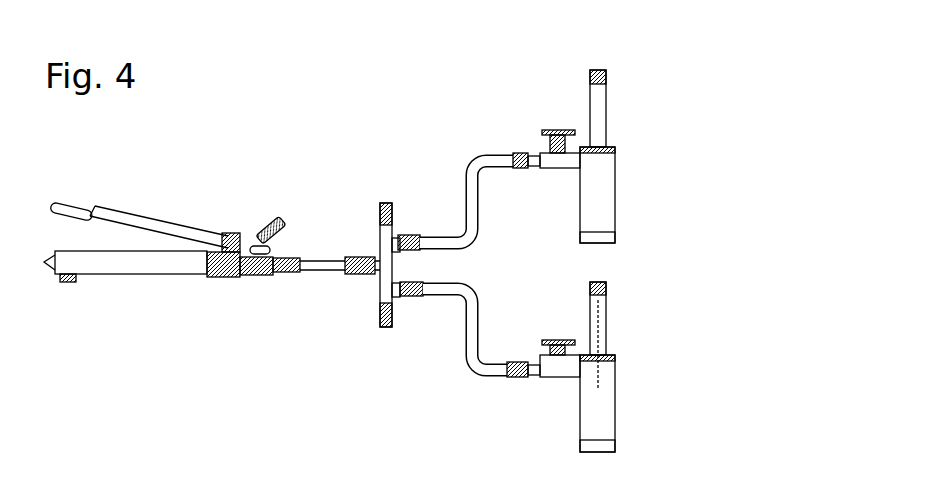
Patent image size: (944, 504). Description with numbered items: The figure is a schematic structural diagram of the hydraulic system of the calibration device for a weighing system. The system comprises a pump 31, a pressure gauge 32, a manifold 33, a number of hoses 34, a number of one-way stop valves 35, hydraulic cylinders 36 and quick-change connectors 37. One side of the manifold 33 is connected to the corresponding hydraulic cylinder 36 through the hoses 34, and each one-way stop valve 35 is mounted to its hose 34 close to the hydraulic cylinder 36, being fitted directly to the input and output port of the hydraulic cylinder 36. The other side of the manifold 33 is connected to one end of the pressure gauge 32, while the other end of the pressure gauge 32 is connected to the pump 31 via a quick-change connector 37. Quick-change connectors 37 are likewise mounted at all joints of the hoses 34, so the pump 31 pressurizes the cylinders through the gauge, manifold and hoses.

The pump 31 is at (113, 260).
The pressure gauge 32 is at (275, 232).
The manifold 33 is at (386, 345).
The hoses 34 is at (480, 228).
The one-way stop valve 35 is at (553, 130).
The hydraulic cylinder 36 is at (598, 180).
The quick-change connector 37 is at (418, 230).